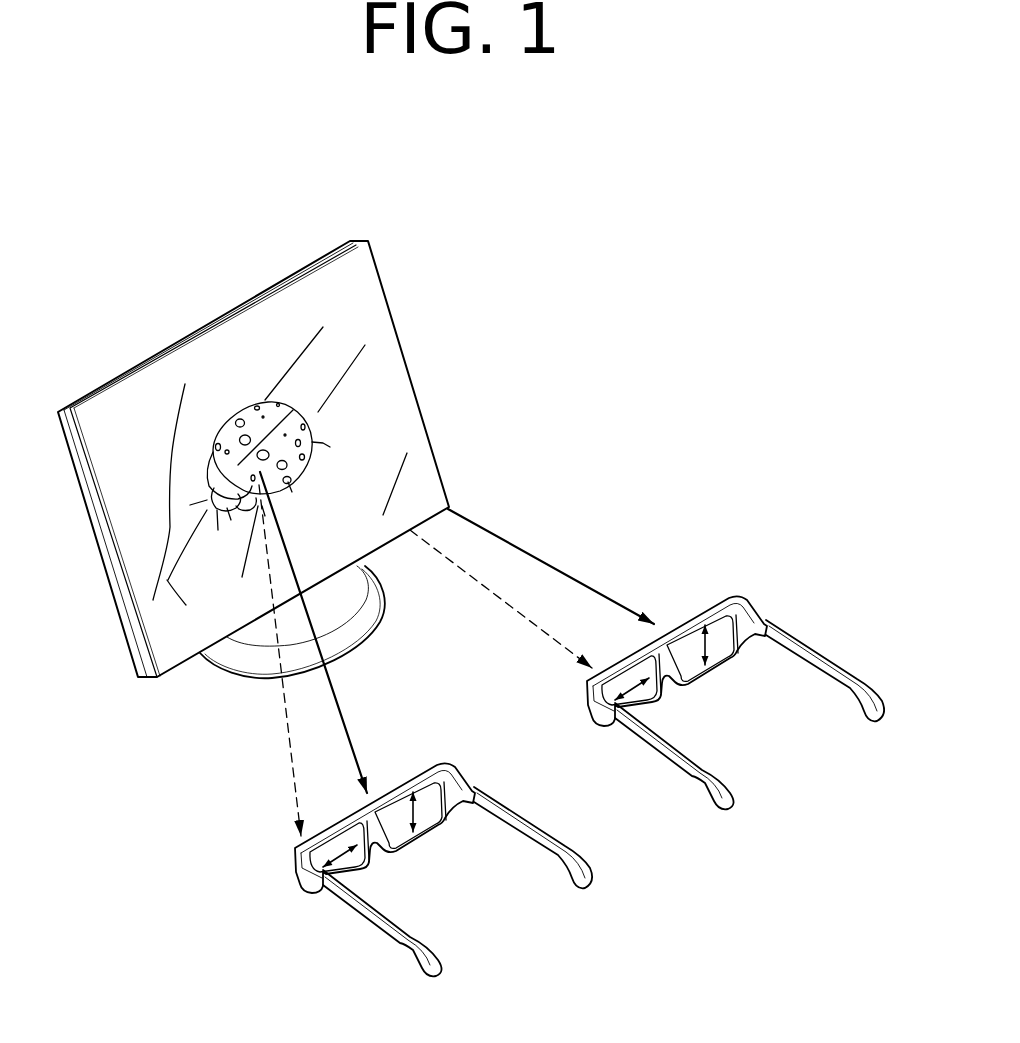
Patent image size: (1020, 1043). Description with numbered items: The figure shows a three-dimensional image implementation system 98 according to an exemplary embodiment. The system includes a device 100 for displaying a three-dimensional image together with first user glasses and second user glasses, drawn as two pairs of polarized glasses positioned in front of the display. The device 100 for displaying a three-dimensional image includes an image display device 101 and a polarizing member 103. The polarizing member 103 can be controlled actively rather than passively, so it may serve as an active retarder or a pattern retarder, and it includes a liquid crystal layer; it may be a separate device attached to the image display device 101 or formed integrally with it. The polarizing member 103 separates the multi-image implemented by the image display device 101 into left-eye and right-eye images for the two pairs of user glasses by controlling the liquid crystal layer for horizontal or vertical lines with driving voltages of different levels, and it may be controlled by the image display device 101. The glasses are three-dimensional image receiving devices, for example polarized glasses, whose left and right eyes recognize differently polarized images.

The 3D image implementation system 98 is at (589, 261).
The device for displaying a 3D image 100 is at (307, 190).
The image display device 101 is at (343, 246).
The polarizing member 103 is at (358, 283).